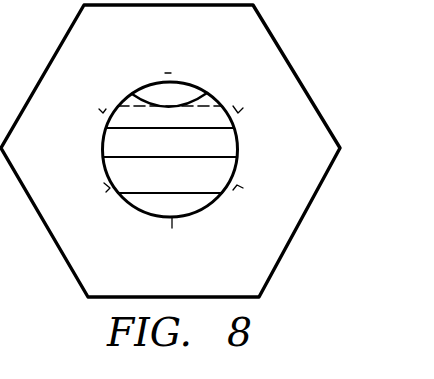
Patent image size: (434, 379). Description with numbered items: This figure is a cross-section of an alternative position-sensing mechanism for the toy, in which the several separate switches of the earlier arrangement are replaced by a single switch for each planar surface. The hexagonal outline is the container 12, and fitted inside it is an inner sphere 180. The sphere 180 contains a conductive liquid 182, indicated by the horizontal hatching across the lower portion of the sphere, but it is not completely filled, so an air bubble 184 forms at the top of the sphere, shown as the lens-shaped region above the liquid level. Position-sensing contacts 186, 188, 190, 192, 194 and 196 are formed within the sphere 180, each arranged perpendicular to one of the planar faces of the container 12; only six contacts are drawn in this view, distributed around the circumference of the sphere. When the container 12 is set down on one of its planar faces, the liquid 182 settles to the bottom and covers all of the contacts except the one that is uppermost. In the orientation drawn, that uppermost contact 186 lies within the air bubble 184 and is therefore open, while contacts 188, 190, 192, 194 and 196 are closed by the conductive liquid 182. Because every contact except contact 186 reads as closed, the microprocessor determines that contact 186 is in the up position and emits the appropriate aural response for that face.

The container 12 is at (287, 58).
The inner sphere 180 is at (117, 104).
The conductive liquid 182 is at (152, 182).
The air bubble 184 is at (182, 90).
The position-sensing contact 186 is at (168, 80).
The position-sensing contact 188 is at (238, 113).
The position-sensing contact 190 is at (237, 185).
The position-sensing contact 192 is at (172, 220).
The position-sensing contact 194 is at (108, 188).
The position-sensing contact 196 is at (103, 112).